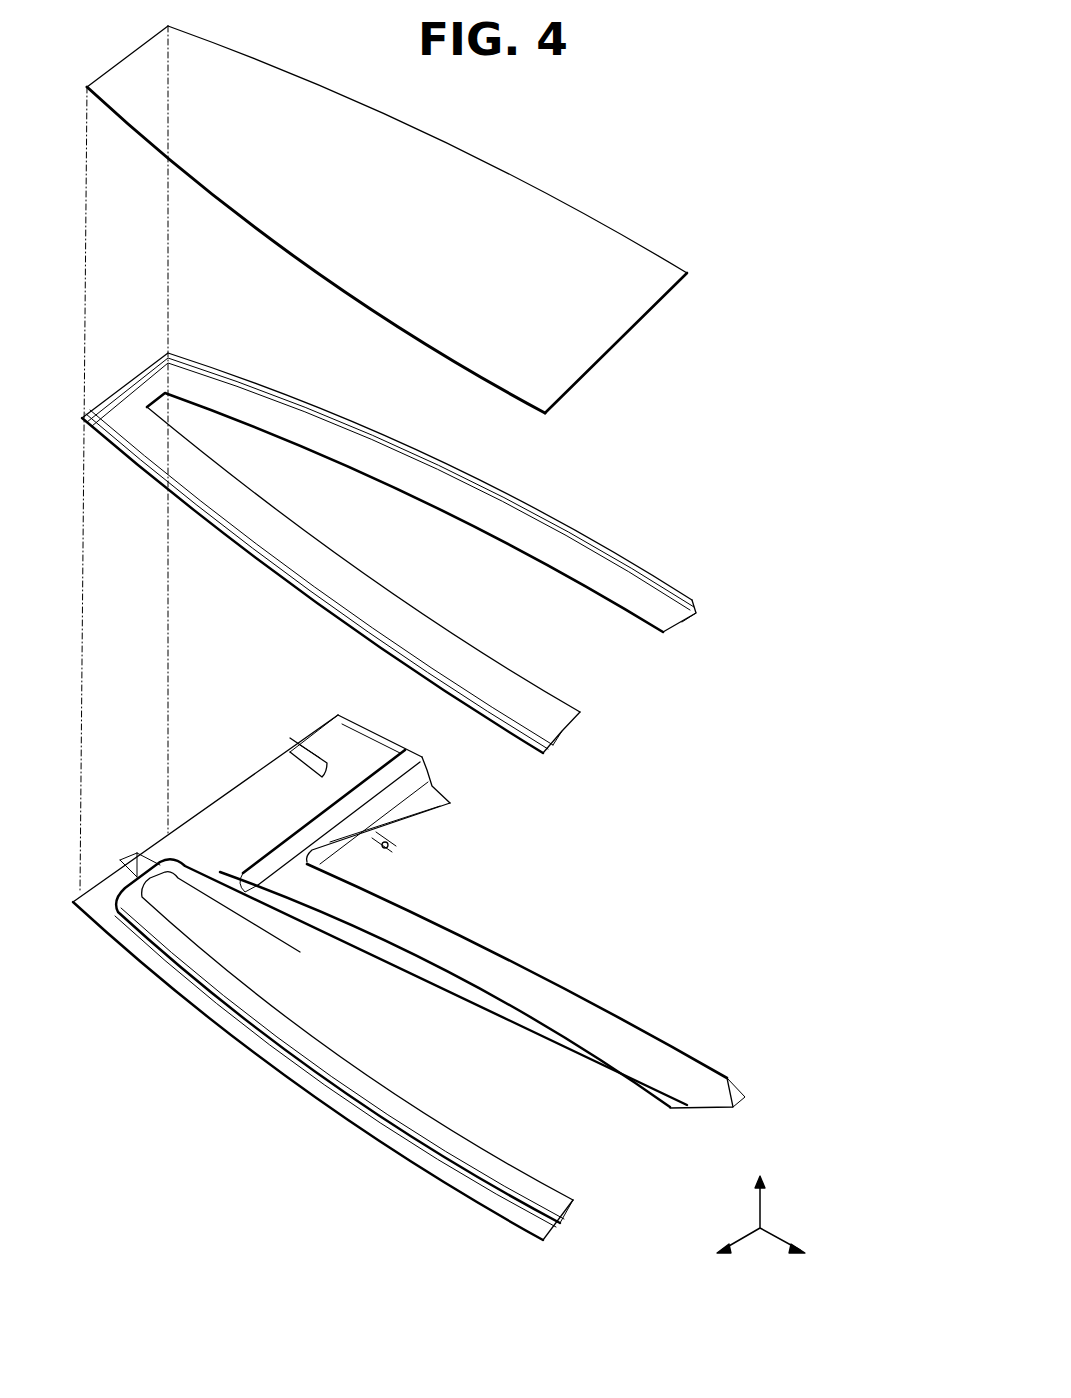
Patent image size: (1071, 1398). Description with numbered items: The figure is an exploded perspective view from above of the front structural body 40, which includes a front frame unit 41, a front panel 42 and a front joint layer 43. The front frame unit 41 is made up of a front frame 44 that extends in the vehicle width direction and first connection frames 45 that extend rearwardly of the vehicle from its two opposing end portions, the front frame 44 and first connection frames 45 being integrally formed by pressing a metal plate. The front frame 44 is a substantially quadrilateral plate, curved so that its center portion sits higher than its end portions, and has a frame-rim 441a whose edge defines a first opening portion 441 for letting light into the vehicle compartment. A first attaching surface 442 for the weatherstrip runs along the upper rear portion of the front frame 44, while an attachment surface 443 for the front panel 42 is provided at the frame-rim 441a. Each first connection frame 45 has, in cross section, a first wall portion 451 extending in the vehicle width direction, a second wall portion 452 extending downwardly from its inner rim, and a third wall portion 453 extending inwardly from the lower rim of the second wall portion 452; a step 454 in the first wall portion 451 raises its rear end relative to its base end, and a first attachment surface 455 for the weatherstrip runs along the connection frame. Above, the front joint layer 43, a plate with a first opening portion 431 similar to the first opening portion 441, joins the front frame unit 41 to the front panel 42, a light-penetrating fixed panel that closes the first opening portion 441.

The front structural body 40 is at (740, 96).
The front frame unit 41 is at (296, 1080).
The front panel 42 is at (531, 184).
The front joint layer 43 is at (617, 558).
The first opening portion 431 is at (543, 560).
The front frame 44 is at (625, 1020).
The first opening portion 441 is at (446, 1124).
The frame-rim 441a is at (474, 1150).
The first attaching surface 442 is at (527, 985).
The attachment surface 443 is at (423, 970).
The first connection frame 45 is at (320, 722).
The first wall portion 451 is at (255, 792).
The second wall portion 452 is at (418, 780).
The third wall portion 453 is at (408, 819).
The step 454 is at (265, 762).
The first attachment surface 455 is at (412, 757).